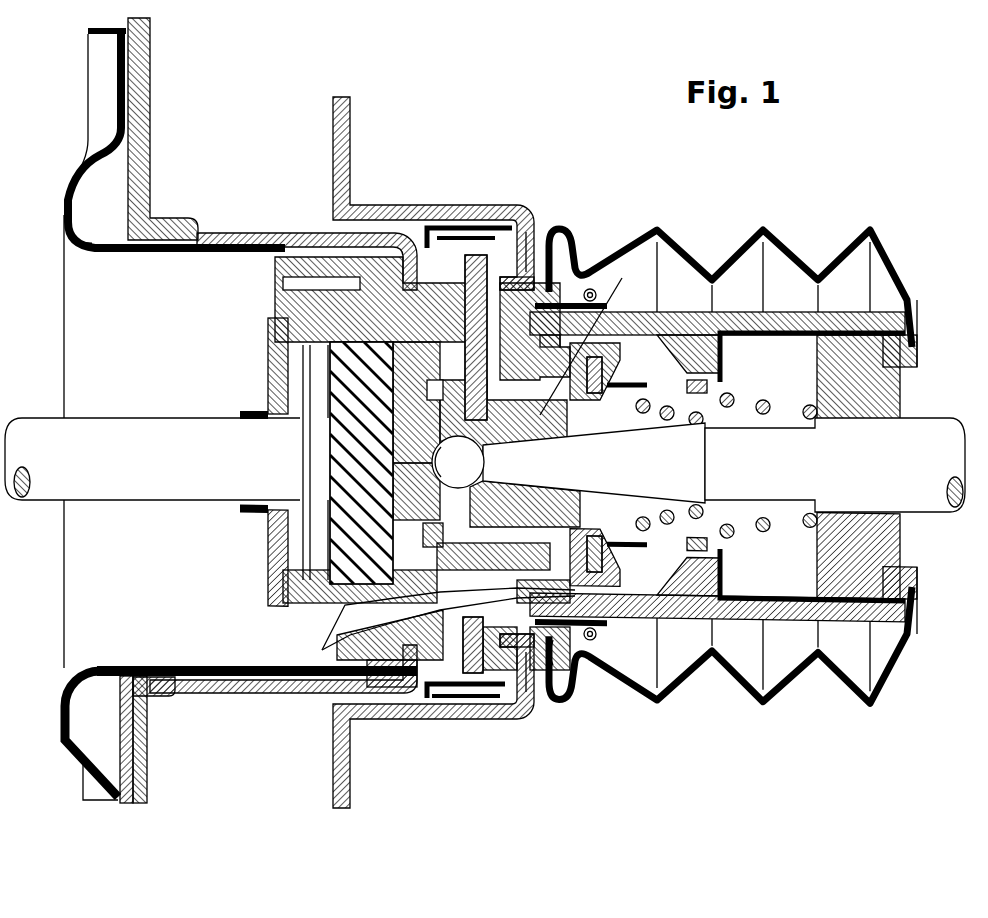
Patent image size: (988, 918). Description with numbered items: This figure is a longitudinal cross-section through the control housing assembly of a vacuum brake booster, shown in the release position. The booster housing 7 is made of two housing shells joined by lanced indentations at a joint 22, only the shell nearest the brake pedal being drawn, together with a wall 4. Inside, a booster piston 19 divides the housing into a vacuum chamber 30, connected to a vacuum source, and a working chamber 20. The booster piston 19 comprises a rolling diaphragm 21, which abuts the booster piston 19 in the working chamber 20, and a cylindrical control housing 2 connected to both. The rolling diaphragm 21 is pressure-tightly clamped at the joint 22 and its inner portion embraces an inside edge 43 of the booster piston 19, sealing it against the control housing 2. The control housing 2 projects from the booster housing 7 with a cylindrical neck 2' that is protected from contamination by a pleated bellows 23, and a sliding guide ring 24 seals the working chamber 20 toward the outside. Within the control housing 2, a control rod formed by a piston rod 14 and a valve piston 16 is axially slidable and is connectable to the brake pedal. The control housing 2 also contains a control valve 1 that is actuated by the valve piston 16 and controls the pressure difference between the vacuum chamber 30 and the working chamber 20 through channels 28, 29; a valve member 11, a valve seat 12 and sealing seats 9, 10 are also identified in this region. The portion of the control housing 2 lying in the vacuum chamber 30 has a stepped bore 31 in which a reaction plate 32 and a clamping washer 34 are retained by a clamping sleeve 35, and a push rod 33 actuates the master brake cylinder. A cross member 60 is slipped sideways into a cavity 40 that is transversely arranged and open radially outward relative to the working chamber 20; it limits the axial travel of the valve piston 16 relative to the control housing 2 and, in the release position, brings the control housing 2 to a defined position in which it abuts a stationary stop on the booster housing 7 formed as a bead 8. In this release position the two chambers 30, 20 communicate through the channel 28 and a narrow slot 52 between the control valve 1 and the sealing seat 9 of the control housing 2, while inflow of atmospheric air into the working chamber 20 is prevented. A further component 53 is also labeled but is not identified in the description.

The control valve 1 is at (697, 657).
The control housing 2 is at (760, 495).
The neck 2' is at (867, 524).
The wall 4 is at (156, 70).
The booster housing 7 is at (333, 771).
The bead 8 is at (495, 250).
The sealing seat 9 is at (599, 289).
The sealing seat 10 is at (510, 640).
The valve member 11 is at (597, 655).
The valve seat 12 is at (598, 650).
The piston rod 14 is at (940, 417).
The valve piston 16 is at (410, 462).
The booster piston 19 is at (145, 748).
The working chamber 20 is at (266, 147).
The rolling diaphragm 21 is at (150, 788).
The joint 22 is at (436, 268).
The pleated bellows 23 is at (787, 345).
The sliding guide ring 24 is at (563, 343).
The channel 28 is at (392, 690).
The channel 29 is at (547, 380).
The vacuum chamber 30 is at (157, 596).
The stepped bore 31 is at (303, 358).
The reaction plate 32 is at (340, 548).
The push rod 33 is at (40, 430).
The clamping washer 34 is at (268, 345).
The clamping sleeve 35 is at (150, 258).
The cavity 40 is at (543, 222).
The inside edge 43 is at (155, 702).
The slot 52 is at (602, 300).
The stop ring 53 is at (822, 345).
The cross member 60 is at (472, 270).